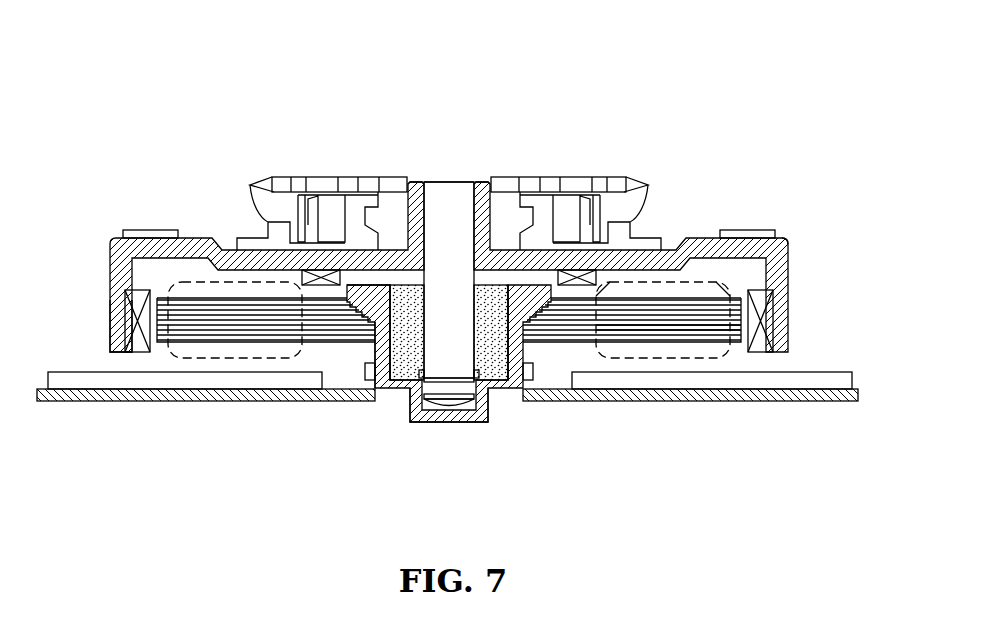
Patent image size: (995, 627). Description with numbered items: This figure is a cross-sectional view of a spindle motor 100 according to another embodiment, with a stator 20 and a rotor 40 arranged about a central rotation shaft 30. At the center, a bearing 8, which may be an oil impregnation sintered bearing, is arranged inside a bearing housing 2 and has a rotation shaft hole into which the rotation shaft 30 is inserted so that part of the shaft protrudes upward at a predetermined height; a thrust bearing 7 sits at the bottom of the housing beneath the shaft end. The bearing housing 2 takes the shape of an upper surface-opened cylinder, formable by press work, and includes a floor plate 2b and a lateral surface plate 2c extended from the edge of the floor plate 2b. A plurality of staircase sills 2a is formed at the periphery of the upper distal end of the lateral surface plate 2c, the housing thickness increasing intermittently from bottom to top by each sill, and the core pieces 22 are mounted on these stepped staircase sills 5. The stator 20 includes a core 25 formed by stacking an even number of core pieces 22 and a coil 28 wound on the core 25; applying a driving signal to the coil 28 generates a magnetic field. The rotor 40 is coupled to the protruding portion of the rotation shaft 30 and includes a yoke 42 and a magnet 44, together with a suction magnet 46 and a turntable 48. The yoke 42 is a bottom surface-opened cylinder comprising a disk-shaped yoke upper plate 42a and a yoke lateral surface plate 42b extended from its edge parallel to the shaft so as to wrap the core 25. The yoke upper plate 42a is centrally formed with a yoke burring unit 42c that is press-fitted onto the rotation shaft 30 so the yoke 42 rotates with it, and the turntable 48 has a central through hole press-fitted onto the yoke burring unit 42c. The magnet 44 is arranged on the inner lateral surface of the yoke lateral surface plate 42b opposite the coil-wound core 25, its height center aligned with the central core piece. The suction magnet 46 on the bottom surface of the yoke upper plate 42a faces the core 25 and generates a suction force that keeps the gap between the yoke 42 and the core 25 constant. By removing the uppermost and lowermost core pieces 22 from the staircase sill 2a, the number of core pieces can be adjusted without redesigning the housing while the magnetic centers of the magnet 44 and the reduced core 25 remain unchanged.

The spindle motor 100 is at (545, 106).
The rotation shaft 30 is at (443, 212).
The rotor 40 is at (792, 273).
The yoke 42 is at (115, 258).
The yoke upper plate 42a is at (192, 242).
The yoke lateral surface plate 42b is at (110, 293).
The yoke burring unit 42c is at (413, 184).
The magnet 44 is at (763, 292).
The suction magnet 46 is at (333, 274).
The turntable 48 is at (598, 172).
The stator 20 is at (737, 354).
The core pieces 22 is at (662, 333).
The core 25 is at (694, 330).
The coil 28 is at (713, 283).
The bearing housing 2 is at (457, 422).
The staircase sills 2a is at (367, 313).
The floor plate 2b is at (498, 402).
The lateral surface plate 2c is at (518, 350).
The staircase sills 5 is at (550, 395).
The thrust bearing 7 is at (438, 422).
The bearing 8 is at (407, 350).